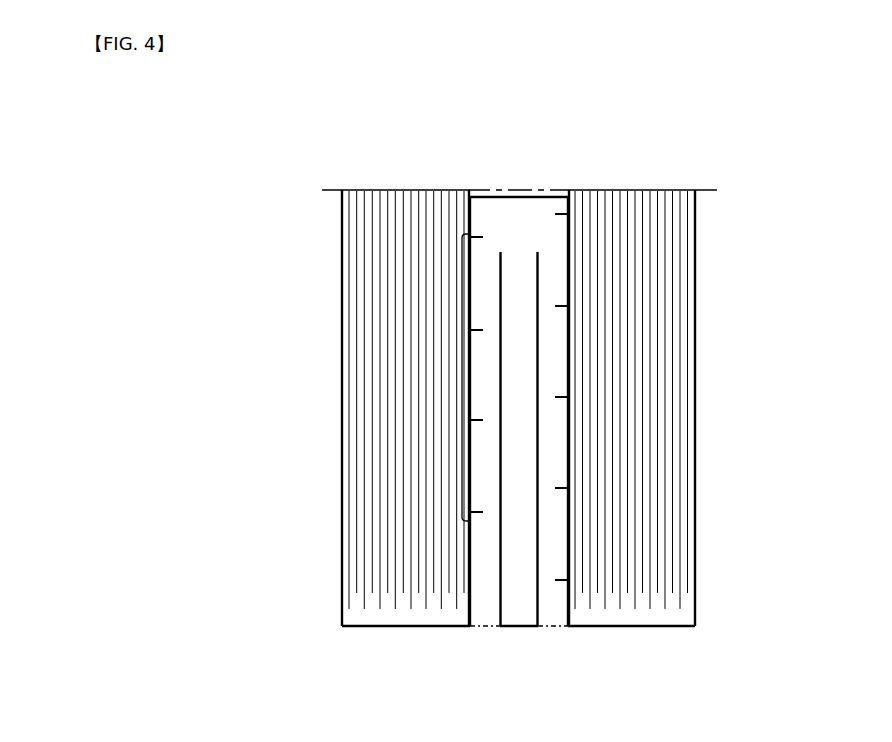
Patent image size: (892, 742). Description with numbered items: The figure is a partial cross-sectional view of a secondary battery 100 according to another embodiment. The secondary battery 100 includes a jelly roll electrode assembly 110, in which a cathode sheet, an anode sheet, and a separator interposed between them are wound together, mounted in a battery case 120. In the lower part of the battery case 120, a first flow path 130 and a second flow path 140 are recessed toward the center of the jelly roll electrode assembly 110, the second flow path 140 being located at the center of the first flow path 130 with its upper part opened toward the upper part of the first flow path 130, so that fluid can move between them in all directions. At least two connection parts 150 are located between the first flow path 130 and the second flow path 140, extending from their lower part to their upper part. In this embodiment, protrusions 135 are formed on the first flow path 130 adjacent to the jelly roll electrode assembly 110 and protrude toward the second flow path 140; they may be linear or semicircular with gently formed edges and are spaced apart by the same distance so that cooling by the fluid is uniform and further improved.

The secondary battery 100 is at (371, 109).
The jelly roll electrode assembly 110 is at (676, 372).
The battery case 120 is at (697, 431).
The first flow path 130 is at (542, 216).
The protrusion 135 is at (460, 377).
The second flow path 140 is at (524, 523).
The connection part 150 is at (555, 629).